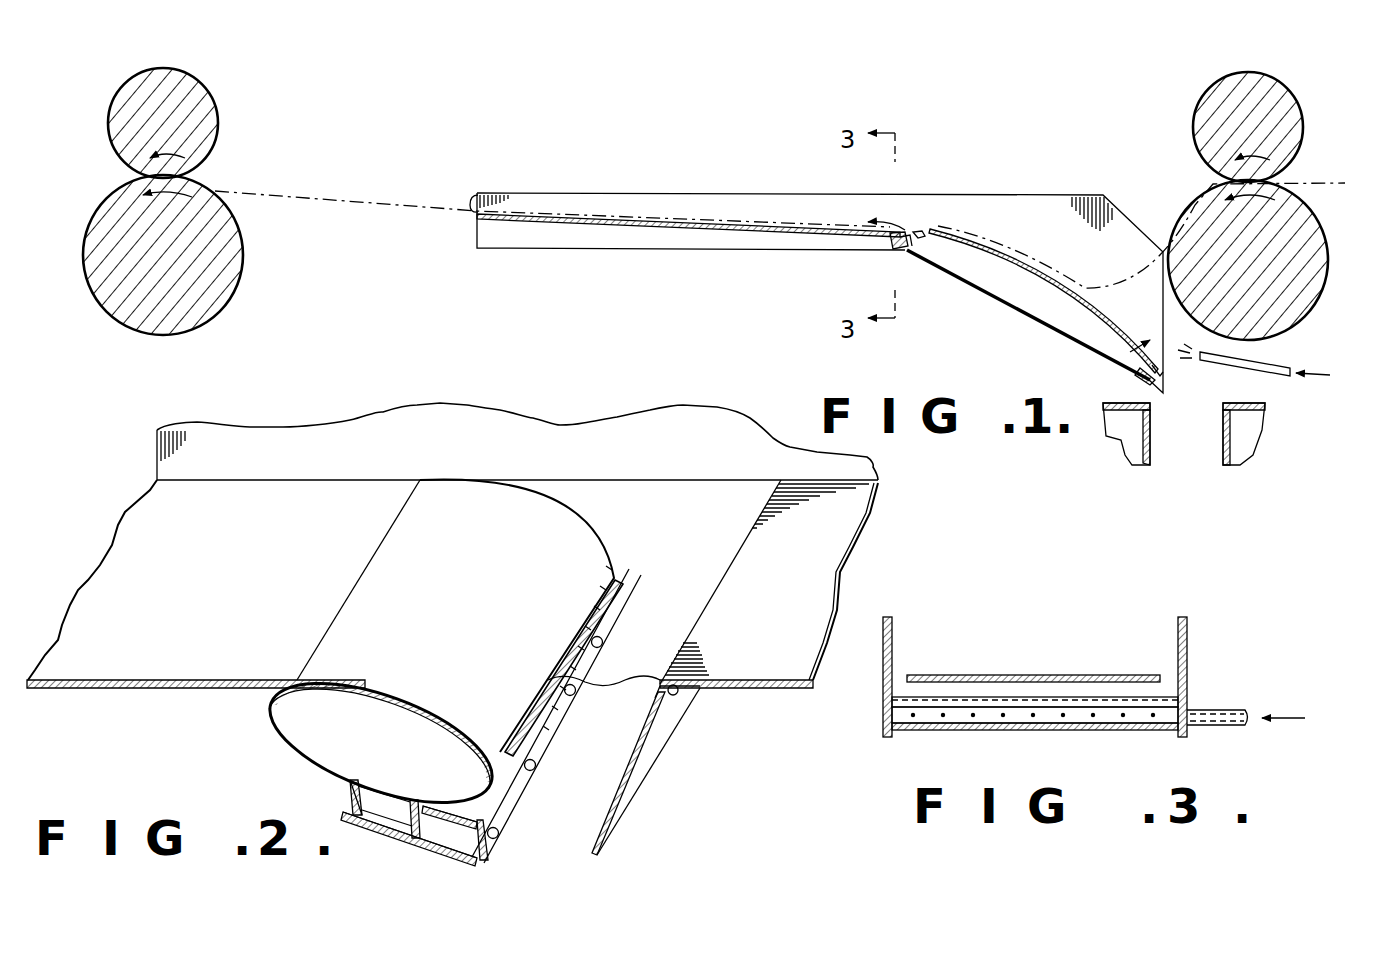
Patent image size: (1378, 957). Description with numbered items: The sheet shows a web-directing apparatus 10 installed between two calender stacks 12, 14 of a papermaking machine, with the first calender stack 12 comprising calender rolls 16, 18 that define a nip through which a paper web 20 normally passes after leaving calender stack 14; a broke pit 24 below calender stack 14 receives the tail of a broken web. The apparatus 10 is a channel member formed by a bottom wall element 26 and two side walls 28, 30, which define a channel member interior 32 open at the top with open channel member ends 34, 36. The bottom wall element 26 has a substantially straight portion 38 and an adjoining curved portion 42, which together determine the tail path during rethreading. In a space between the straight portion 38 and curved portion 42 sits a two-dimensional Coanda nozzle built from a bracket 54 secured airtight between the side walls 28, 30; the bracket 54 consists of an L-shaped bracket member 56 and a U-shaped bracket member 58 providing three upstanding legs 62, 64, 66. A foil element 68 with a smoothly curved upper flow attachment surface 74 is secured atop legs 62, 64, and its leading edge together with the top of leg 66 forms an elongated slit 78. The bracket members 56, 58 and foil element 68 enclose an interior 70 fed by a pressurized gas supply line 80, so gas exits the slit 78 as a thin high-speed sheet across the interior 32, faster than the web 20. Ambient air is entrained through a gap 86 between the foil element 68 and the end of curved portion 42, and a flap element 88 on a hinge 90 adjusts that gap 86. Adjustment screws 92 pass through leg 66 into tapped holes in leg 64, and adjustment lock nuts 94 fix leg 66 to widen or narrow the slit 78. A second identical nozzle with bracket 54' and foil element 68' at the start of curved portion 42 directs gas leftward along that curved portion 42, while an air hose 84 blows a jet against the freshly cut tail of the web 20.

In FIG. 1, the apparatus 10 is at (984, 186).
In FIG. 1, the calender stack 12 is at (86, 125).
In FIG. 1, the calender stack 14 is at (1302, 160).
In FIG. 1, the calender roll 16 is at (195, 90).
In FIG. 1, the calender roll 18 is at (205, 312).
In FIG. 1, the paper web 20 is at (370, 206).
In FIG. 3, the paper web 20 is at (1062, 675).
In FIG. 1, the broke pit 24 is at (1222, 455).
In FIG. 1, the bottom wall element 26 is at (617, 237).
In FIG. 3, the bottom wall element 26 is at (988, 697).
In FIG. 1, the side wall 28 is at (712, 200).
In FIG. 2, the side wall 28 is at (512, 428).
In FIG. 3, the side wall 28 is at (1188, 652).
In FIG. 3, the side wall 30 is at (893, 642).
In FIG. 1, the channel member interior 32 is at (1050, 200).
In FIG. 1, the open channel member end 34 is at (470, 197).
In FIG. 1, the open channel member end 36 is at (1120, 308).
In FIG. 1, the straight portion 38 is at (727, 240).
In FIG. 2, the straight portion 38 is at (150, 683).
In FIG. 1, the curved portion 42 is at (1045, 282).
In FIG. 2, the curved portion 42 is at (712, 622).
In FIG. 1, the bracket 54 is at (874, 260).
In FIG. 2, the bracket 54 is at (369, 819).
In FIG. 1, the bracket 54' is at (1108, 383).
In FIG. 2, the L-shaped bracket member 56 is at (426, 850).
In FIG. 3, the L-shaped bracket member 56 is at (994, 732).
In FIG. 2, the U-shaped bracket member 58 is at (374, 830).
In FIG. 2, the upstanding leg 62 is at (346, 784).
In FIG. 2, the upstanding leg 64 is at (412, 800).
In FIG. 2, the upstanding leg 66 is at (488, 845).
In FIG. 3, the upstanding leg 66 is at (1055, 718).
In FIG. 1, the foil element 68 is at (919, 218).
In FIG. 2, the foil element 68 is at (594, 502).
In FIG. 3, the foil element 68 is at (1035, 666).
In FIG. 1, the foil element 68' is at (1195, 383).
In FIG. 2, the interior 70 is at (480, 806).
In FIG. 2, the flow attachment surface 74 is at (522, 628).
In FIG. 2, the slit 78 is at (620, 590).
In FIG. 3, the pressurized gas supply line 80 is at (1237, 711).
In FIG. 1, the air hose 84 is at (1285, 363).
In FIG. 2, the gap 86 is at (753, 524).
In FIG. 2, the flap element 88 is at (655, 748).
In FIG. 2, the hinge 90 is at (680, 694).
In FIG. 2, the adjustment screw 92 is at (603, 642).
In FIG. 3, the adjustment screw 92 is at (1123, 718).
In FIG. 2, the adjustment lock nut 94 is at (462, 848).